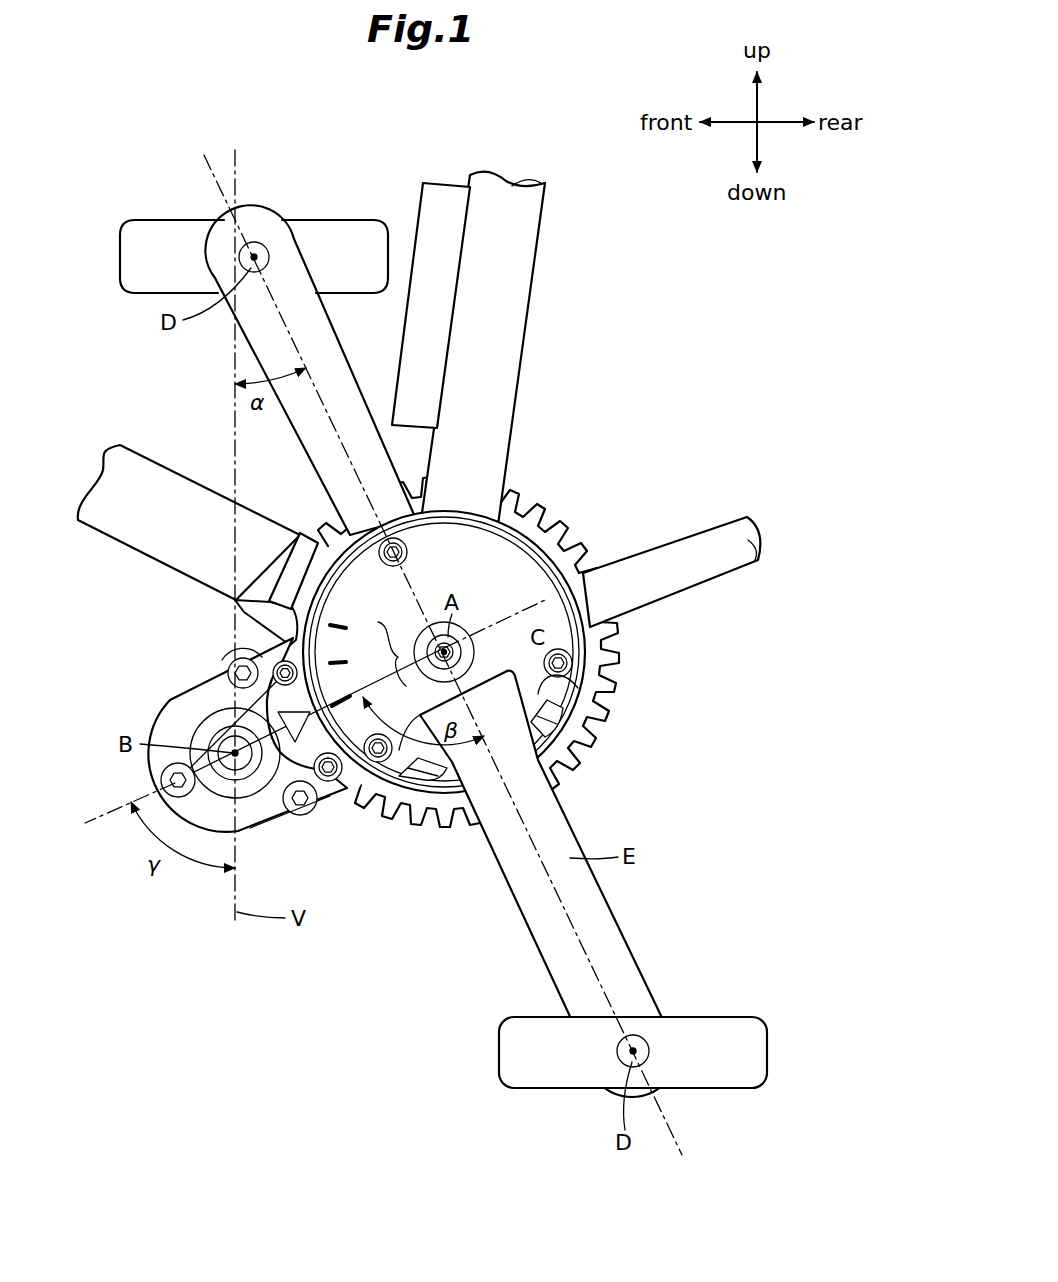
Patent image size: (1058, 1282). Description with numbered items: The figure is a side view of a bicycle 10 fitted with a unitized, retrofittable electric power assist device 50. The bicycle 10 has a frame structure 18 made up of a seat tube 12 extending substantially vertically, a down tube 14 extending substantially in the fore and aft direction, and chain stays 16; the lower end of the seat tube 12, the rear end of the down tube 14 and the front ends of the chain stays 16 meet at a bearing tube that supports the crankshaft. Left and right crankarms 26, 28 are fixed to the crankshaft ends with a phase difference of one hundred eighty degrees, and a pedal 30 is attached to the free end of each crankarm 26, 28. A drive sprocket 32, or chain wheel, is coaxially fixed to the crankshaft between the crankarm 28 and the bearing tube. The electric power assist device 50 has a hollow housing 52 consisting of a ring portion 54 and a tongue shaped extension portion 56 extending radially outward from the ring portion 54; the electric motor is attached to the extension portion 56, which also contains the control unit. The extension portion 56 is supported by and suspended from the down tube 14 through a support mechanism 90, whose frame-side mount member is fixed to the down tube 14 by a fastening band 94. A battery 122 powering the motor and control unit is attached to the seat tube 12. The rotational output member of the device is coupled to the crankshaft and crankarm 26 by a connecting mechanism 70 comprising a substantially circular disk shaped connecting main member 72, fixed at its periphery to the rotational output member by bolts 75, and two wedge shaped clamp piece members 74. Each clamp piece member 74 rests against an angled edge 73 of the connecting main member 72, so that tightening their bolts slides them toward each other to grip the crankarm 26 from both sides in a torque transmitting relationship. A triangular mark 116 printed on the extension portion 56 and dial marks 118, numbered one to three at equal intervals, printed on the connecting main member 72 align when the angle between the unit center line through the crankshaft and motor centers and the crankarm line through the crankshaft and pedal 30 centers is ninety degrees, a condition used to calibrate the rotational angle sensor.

The bicycle 10 is at (607, 386).
The seat tube 12 is at (523, 240).
The down tube 14 is at (162, 475).
The chain stays 16 is at (700, 530).
The frame structure 18 is at (531, 458).
The crankarm 26 is at (612, 936).
The crankarm 28 is at (283, 230).
The pedal 30 is at (163, 228).
The drive sprocket 32 is at (548, 530).
The electric power assist device 50 is at (336, 810).
The housing 52 is at (190, 694).
The ring portion 54 is at (540, 545).
The extension portion 56 is at (270, 822).
The connecting mechanism 70 is at (521, 592).
The connecting main member 72 is at (444, 629).
The angled edge 73 is at (562, 690).
The clamp piece member 74 is at (588, 733).
The bolt 75 is at (560, 663).
The support mechanism 90 is at (229, 641).
The fastening band 94 is at (292, 548).
The triangular mark 116 is at (208, 718).
The marks [1] to [3] 118 is at (404, 667).
The battery 122 is at (442, 200).